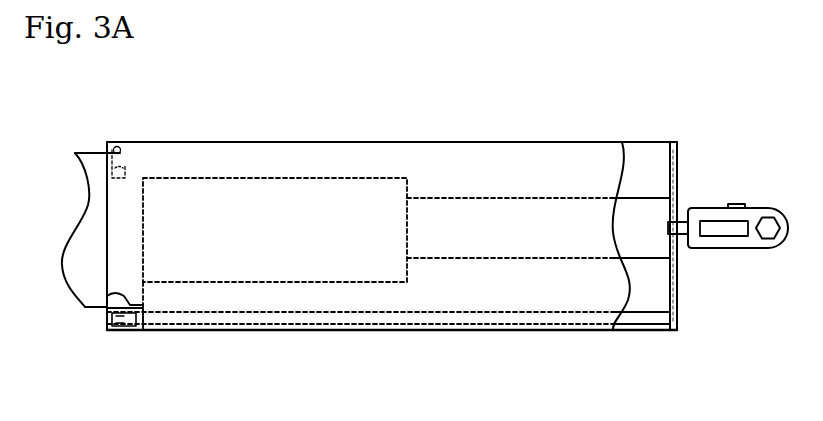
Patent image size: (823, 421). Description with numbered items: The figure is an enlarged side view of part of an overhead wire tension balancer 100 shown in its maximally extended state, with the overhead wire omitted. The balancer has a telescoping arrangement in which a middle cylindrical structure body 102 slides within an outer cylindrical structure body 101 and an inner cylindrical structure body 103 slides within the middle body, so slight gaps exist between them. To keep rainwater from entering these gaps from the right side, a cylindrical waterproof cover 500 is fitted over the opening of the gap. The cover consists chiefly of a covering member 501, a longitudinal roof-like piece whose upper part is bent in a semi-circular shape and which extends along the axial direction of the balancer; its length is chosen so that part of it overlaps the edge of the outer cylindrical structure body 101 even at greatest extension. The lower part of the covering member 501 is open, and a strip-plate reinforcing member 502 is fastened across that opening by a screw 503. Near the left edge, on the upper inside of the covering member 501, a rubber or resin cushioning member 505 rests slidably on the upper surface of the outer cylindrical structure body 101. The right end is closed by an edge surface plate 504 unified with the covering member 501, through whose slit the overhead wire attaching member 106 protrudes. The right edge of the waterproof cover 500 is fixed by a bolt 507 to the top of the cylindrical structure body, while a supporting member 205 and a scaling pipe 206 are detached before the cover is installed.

The overhead wire tension balancer 100 is at (71, 304).
The outer cylindrical structure body 101 is at (91, 165).
The middle cylindrical structure body 102 is at (305, 190).
The inner cylindrical structure body 103 is at (456, 215).
The overhead wire attaching member 106 is at (708, 213).
The supporting member 205 is at (669, 290).
The scaling pipe 206 is at (625, 315).
The waterproof cover 500 is at (509, 140).
The covering member 501 is at (372, 141).
The reinforcing member 502 is at (106, 321).
The screw 503 is at (119, 328).
The edge surface plate 504 is at (677, 298).
The cushioning member 505 is at (122, 160).
The bolt 507 is at (683, 252).